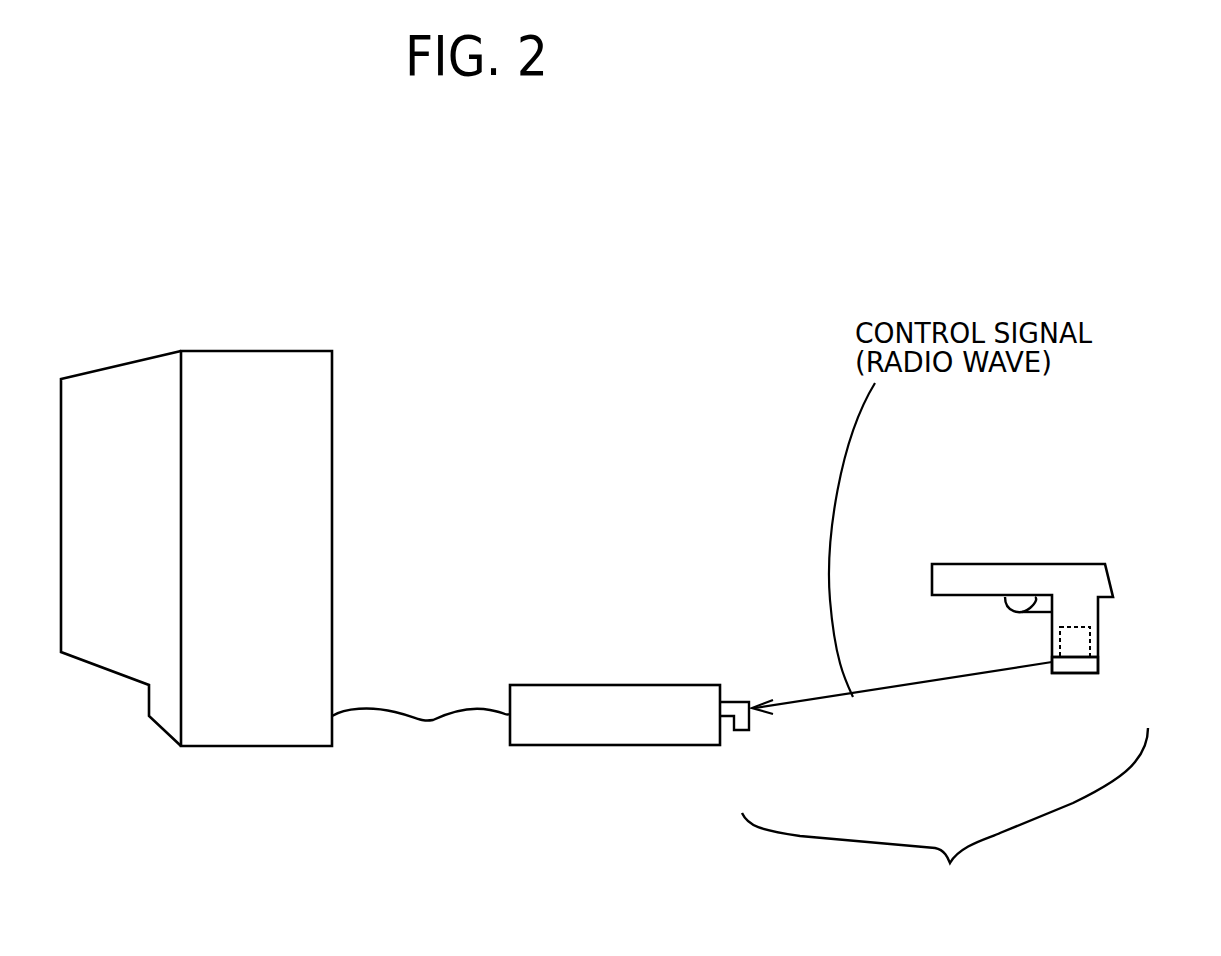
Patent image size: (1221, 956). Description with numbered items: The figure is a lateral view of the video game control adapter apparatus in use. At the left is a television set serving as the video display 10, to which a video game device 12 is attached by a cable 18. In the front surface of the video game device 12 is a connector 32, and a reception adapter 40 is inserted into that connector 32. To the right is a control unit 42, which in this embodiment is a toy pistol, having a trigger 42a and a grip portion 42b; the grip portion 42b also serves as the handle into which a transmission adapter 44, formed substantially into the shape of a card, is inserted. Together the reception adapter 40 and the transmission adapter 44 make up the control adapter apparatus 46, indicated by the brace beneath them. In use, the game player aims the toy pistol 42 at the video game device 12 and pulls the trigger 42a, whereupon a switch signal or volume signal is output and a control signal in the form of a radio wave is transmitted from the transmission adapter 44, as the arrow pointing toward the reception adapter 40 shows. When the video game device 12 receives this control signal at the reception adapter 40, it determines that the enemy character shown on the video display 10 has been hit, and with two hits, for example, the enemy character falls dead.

The video display 10 is at (291, 352).
The video game device 12 is at (650, 746).
The cable 18 is at (433, 720).
The connector 32 is at (721, 685).
The reception adapter 40 is at (738, 730).
The control unit 42 is at (1045, 628).
The trigger 42a is at (1020, 612).
The grip portion 42b is at (1098, 640).
The transmission adapter 44 is at (1073, 665).
The control adapter apparatus 46 is at (945, 816).